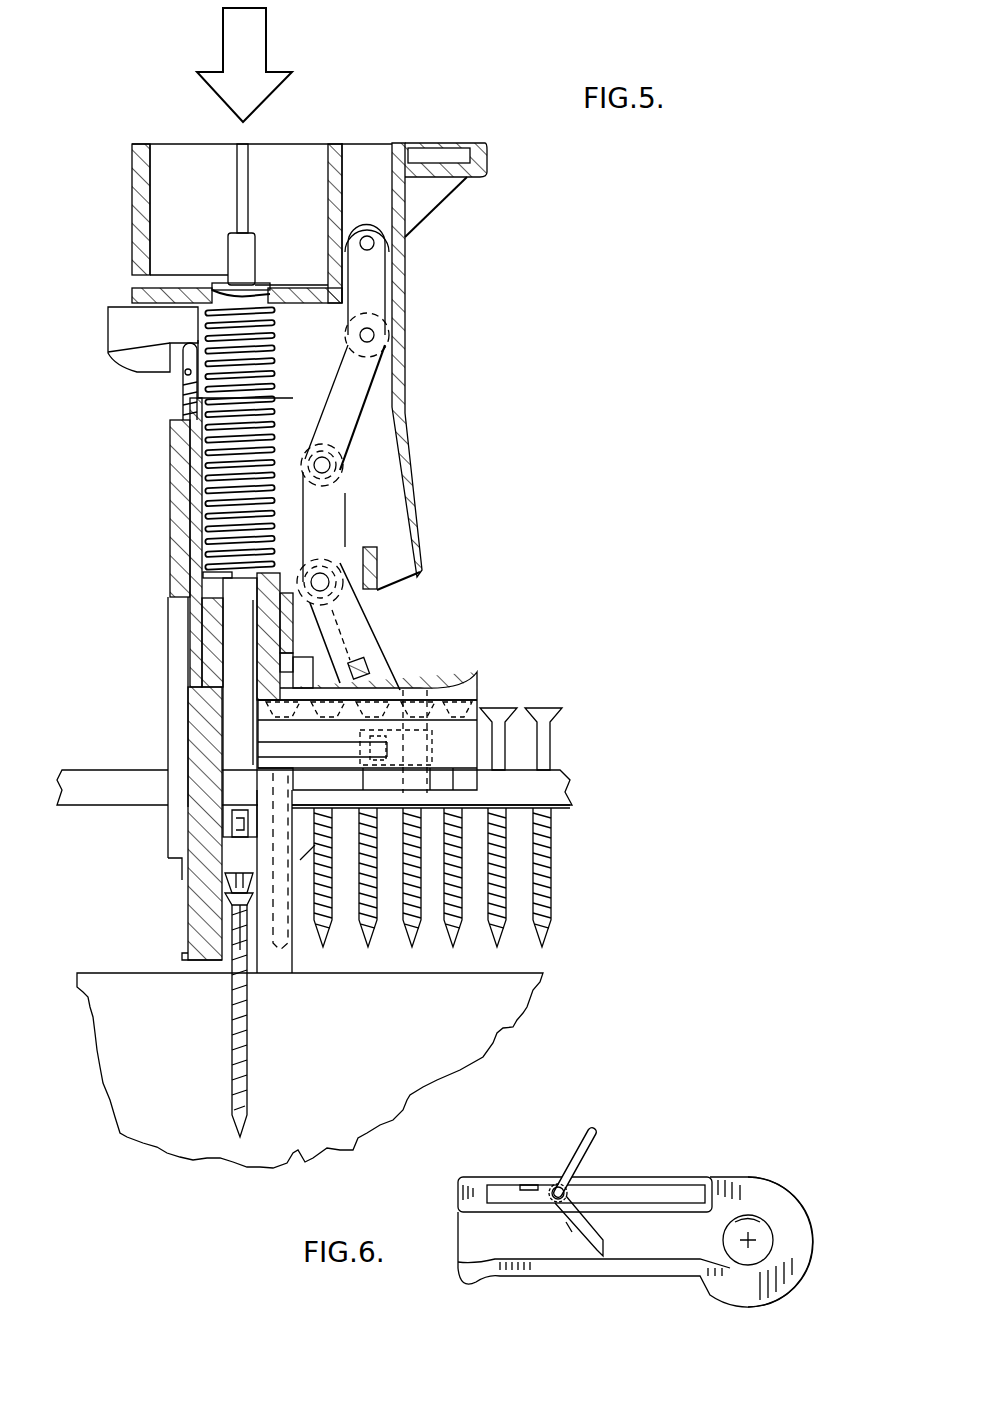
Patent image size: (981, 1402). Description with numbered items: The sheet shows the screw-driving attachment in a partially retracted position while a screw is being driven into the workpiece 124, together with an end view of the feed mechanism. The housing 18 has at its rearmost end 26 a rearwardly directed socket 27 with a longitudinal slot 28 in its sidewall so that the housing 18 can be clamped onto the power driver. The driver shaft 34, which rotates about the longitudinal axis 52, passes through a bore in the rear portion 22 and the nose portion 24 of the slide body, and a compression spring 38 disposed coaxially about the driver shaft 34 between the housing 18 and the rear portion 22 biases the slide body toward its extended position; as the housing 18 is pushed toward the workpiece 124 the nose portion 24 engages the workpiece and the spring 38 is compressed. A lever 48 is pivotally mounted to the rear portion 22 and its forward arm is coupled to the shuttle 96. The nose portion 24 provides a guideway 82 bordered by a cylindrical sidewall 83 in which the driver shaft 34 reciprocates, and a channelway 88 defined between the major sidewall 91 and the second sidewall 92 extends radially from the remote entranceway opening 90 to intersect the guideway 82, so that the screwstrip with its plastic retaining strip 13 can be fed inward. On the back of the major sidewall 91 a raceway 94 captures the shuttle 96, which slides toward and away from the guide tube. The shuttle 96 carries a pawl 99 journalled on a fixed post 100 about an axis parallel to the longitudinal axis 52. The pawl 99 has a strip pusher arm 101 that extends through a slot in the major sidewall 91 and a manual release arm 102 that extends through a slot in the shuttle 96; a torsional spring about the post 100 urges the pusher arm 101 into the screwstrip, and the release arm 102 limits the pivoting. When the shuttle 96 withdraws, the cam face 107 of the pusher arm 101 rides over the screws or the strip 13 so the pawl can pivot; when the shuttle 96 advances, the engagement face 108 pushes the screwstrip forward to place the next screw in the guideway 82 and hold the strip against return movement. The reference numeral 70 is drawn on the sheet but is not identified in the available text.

In FIG. 5, the retaining strip 13 is at (100, 770).
In FIG. 5, the housing 18 is at (172, 468).
In FIG. 5, the rear portion 22 is at (190, 612).
In FIG. 5, the nose portion 24 is at (207, 645).
In FIG. 5, the rearmost end 26 is at (160, 143).
In FIG. 5, the socket 27 is at (192, 160).
In FIG. 5, the longitudinal slot 28 is at (249, 175).
In FIG. 5, the driver shaft 34 is at (254, 254).
In FIG. 5, the compression spring 38 is at (278, 356).
In FIG. 5, the lever 48 is at (330, 515).
In FIG. 6, the longitudinal axis 52 is at (765, 1250).
In FIG. 5, the frame 70 is at (382, 196).
In FIG. 5, the guideway 82 is at (236, 725).
In FIG. 6, the guideway 82 is at (773, 1235).
In FIG. 6, the sidewall 83 is at (750, 1222).
In FIG. 5, the channelway 88 is at (487, 692).
In FIG. 6, the entranceway opening 90 is at (458, 1245).
In FIG. 6, the major sidewall 91 is at (470, 1175).
In FIG. 6, the sidewall 92 is at (585, 1270).
In FIG. 6, the raceway 94 is at (675, 1195).
In FIG. 5, the shuttle 96 is at (383, 790).
In FIG. 6, the shuttle 96 is at (548, 1190).
In FIG. 6, the pawl 99 is at (613, 1122).
In FIG. 6, the post 100 is at (553, 1198).
In FIG. 6, the strip pusher arm 101 is at (597, 1226).
In FIG. 6, the manual release arm 102 is at (590, 1155).
In FIG. 6, the cam face 107 is at (568, 1226).
In FIG. 6, the engagement face 108 is at (603, 1250).
In FIG. 5, the workpiece 124 is at (402, 1055).